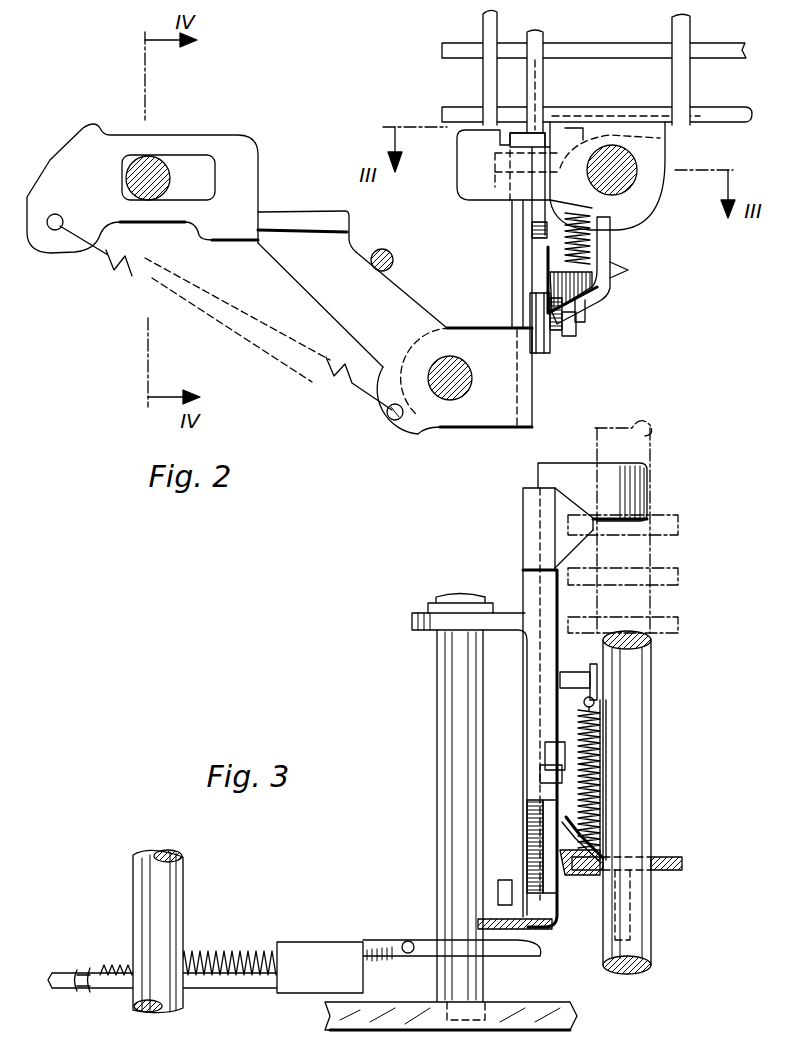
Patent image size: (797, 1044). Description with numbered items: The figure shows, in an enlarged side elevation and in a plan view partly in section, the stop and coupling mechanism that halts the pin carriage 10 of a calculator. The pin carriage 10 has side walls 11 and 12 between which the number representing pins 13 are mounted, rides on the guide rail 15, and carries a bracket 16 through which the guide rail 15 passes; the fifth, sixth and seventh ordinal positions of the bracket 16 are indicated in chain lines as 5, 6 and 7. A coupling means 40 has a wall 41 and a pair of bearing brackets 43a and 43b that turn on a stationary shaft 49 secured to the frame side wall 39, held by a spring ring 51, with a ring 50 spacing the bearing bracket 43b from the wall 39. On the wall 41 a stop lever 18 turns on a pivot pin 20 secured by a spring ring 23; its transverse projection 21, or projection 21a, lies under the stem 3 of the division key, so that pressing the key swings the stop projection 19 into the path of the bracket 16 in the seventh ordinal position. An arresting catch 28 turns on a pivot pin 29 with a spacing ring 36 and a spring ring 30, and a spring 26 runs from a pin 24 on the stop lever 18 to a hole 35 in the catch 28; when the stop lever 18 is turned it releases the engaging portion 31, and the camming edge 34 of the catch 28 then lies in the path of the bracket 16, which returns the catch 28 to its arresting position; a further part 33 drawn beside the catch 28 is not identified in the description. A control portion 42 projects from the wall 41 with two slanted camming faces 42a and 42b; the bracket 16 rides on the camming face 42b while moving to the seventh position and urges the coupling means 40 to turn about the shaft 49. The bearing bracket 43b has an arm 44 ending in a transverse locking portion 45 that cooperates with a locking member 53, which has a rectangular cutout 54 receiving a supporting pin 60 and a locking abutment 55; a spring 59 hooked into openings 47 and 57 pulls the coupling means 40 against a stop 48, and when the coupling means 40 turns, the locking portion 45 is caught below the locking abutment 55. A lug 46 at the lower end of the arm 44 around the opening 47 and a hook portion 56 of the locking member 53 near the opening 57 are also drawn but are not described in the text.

In FIG. 2, the stem 3 is at (490, 35).
In FIG. 3, the stem 3 is at (520, 948).
In FIG. 3, the fifth ordinal position 5 is at (637, 620).
In FIG. 3, the sixth ordinal position 6 is at (637, 577).
In FIG. 3, the seventh ordinal position 7 is at (637, 521).
In FIG. 2, the pin carriage 10 is at (722, 92).
In FIG. 3, the pin carriage 10 is at (696, 861).
In FIG. 2, the side wall 11 is at (536, 60).
In FIG. 2, the side wall 12 is at (682, 58).
In FIG. 2, the pins 13 is at (714, 52).
In FIG. 2, the guide rail 15 is at (625, 170).
In FIG. 3, the guide rail 15 is at (637, 686).
In FIG. 2, the bracket 16 is at (658, 183).
In FIG. 3, the bracket 16 is at (672, 858).
In FIG. 2, the stop lever 18 is at (535, 147).
In FIG. 3, the stop lever 18 is at (548, 602).
In FIG. 2, the stop projection 19 is at (622, 273).
In FIG. 3, the stop projection 19 is at (586, 475).
In FIG. 2, the pivot pin 20 is at (520, 300).
In FIG. 3, the pivot pin 20 is at (547, 762).
In FIG. 2, the transverse projection 21 is at (470, 163).
In FIG. 3, the transverse projection 21 is at (494, 880).
In FIG. 2, the projection 21a is at (468, 138).
In FIG. 3, the spring ring 23 is at (600, 752).
In FIG. 2, the pin 24 is at (595, 210).
In FIG. 3, the pin 24 is at (573, 680).
In FIG. 2, the spring 26 is at (600, 247).
In FIG. 3, the spring 26 is at (604, 735).
In FIG. 2, the arresting catch 28 is at (600, 294).
In FIG. 3, the arresting catch 28 is at (598, 796).
In FIG. 2, the pivot pin 29 is at (565, 330).
In FIG. 2, the spring ring 30 is at (566, 338).
In FIG. 2, the engaging portion 31 is at (530, 231).
In FIG. 3, the engaging portion 31 is at (548, 746).
In FIG. 2, the lug 33 is at (584, 318).
In FIG. 3, the lug 33 is at (570, 862).
In FIG. 3, the camming edge 34 is at (622, 917).
In FIG. 2, the hole 35 is at (590, 305).
In FIG. 2, the spacing ring 36 is at (540, 345).
In FIG. 3, the side wall 39 is at (565, 1012).
In FIG. 2, the coupling means 40 is at (518, 433).
In FIG. 2, the wall 41 is at (514, 256).
In FIG. 3, the wall 41 is at (534, 690).
In FIG. 2, the control portion 42 is at (572, 160).
In FIG. 3, the control portion 42 is at (548, 521).
In FIG. 3, the camming face 42a is at (575, 497).
In FIG. 3, the camming face 42b is at (585, 552).
In FIG. 3, the bearing bracket 43a is at (424, 607).
In FIG. 2, the bearing bracket 43b is at (472, 412).
In FIG. 3, the bearing bracket 43b is at (444, 958).
In FIG. 2, the arm 44 is at (405, 316).
In FIG. 3, the arm 44 is at (375, 958).
In FIG. 2, the locking portion 45 is at (308, 222).
In FIG. 3, the locking portion 45 is at (303, 968).
In FIG. 2, the lug 46 is at (403, 432).
In FIG. 2, the opening 47 is at (392, 417).
In FIG. 3, the opening 47 is at (398, 940).
In FIG. 2, the stop 48 is at (380, 249).
In FIG. 2, the shaft 49 is at (443, 392).
In FIG. 3, the shaft 49 is at (448, 698).
In FIG. 3, the ring 50 is at (497, 982).
In FIG. 3, the spring ring 51 is at (436, 598).
In FIG. 2, the locking member 53 is at (105, 152).
In FIG. 3, the locking member 53 is at (114, 979).
In FIG. 2, the rectangular cutout 54 is at (196, 170).
In FIG. 3, the rectangular cutout 54 is at (222, 980).
In FIG. 2, the locking abutment 55 is at (226, 243).
In FIG. 2, the hook 56 is at (66, 242).
In FIG. 2, the opening 57 is at (55, 231).
In FIG. 2, the spring 59 is at (150, 282).
In FIG. 3, the spring 59 is at (245, 950).
In FIG. 2, the supporting pin 60 is at (148, 178).
In FIG. 3, the supporting pin 60 is at (152, 920).